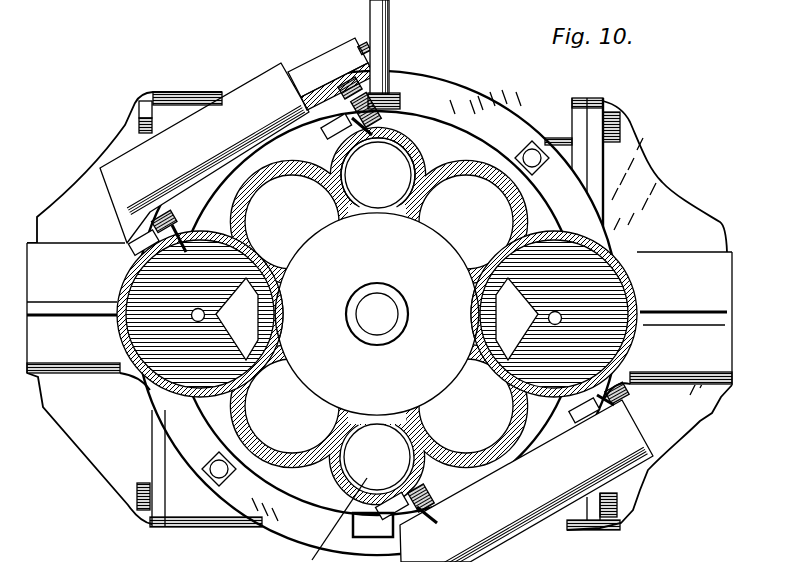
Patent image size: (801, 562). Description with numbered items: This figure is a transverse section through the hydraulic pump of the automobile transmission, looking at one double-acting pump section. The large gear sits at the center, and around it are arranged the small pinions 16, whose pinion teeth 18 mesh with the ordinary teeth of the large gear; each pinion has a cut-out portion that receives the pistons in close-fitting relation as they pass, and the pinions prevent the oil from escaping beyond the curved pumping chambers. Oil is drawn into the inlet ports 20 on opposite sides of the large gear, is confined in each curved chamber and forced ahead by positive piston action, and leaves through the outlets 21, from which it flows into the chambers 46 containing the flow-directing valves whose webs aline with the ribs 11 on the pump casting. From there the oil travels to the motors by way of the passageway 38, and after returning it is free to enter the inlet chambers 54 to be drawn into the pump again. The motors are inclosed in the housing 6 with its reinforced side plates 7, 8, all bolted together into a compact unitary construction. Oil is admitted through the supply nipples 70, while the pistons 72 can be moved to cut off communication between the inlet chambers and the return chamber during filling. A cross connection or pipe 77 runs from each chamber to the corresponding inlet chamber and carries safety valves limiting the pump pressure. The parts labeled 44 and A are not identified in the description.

The housing 6 is at (551, 137).
The reinforced side plate 7 is at (160, 94).
The reinforced side plate 8 is at (596, 104).
The ribs 11 is at (220, 546).
The pinion 16 is at (570, 240).
The pinion teeth 18 is at (250, 317).
The inlet ports 20 is at (360, 208).
The outlets 21 is at (272, 288).
The passageway 38 is at (188, 93).
The pipe 44 is at (395, 43).
The chambers 46 is at (626, 293).
The inlet chambers 54 is at (390, 160).
The supply nipples 70 is at (320, 72).
The pistons 72 is at (676, 442).
The cross connection or pipe 77 is at (516, 543).
The stator chamber wall A is at (453, 222).